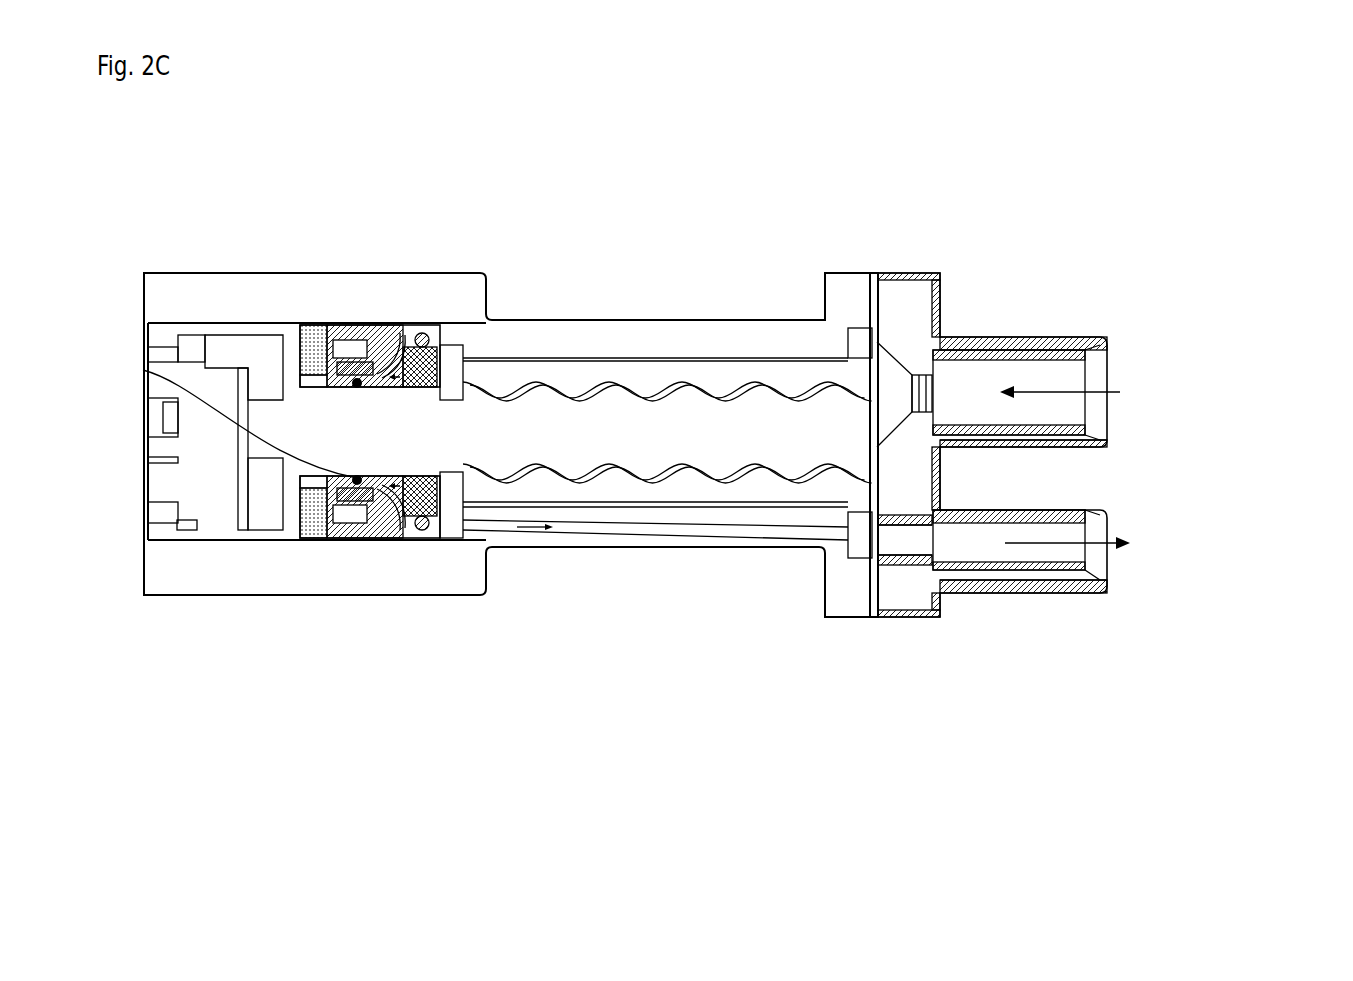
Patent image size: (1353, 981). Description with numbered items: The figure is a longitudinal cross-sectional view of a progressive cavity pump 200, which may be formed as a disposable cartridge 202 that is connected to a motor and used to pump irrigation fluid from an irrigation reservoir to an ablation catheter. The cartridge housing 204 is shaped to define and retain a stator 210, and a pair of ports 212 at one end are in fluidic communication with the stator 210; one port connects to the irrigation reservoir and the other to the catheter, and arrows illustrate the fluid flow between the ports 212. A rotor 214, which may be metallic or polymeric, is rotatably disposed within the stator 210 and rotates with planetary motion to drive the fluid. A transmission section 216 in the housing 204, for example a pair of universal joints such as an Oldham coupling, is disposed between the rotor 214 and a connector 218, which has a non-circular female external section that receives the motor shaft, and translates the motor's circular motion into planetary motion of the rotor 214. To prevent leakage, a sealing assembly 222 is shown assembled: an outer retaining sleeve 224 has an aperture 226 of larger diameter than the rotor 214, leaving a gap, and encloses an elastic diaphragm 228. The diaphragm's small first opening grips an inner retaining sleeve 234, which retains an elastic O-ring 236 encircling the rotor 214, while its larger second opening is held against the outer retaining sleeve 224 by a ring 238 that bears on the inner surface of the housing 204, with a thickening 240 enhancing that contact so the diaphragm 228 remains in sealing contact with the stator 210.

The progressive cavity pump 200 is at (408, 262).
The cartridge 202 is at (117, 285).
The cartridge housing 204 is at (773, 333).
The stator 210 is at (646, 497).
The ports 212 is at (1028, 335).
The rotor 214 is at (645, 437).
The transmission section 216 is at (258, 338).
The connector 218 is at (148, 418).
The sealing assembly 222 is at (372, 418).
The outer retaining sleeve 224 is at (310, 335).
The aperture 226 is at (238, 488).
The elastic diaphragm 228 is at (397, 330).
The inner retaining sleeve 234 is at (372, 362).
The O-ring 236 is at (143, 372).
The ring 238 is at (440, 540).
The thickening 240 is at (437, 337).